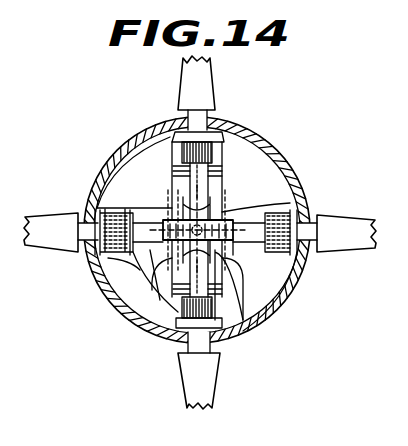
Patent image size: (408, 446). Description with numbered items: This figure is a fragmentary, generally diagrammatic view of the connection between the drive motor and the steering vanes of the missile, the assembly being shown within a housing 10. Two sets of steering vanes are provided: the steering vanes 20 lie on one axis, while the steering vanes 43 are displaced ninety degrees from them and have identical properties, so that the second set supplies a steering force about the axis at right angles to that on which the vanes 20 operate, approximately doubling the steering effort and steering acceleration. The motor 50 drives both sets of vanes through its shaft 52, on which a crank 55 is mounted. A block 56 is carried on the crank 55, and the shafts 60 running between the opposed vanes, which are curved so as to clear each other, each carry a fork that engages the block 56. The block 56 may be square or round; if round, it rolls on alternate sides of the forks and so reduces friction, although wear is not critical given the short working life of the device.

The housing ring 10 is at (272, 138).
The steering vanes 20 is at (41, 216).
The steering vanes 43 is at (205, 76).
The motor 50 is at (160, 292).
The shaft of the motor 52 is at (220, 278).
The crank 55 is at (178, 219).
The block 56 is at (172, 258).
The shafts 60 is at (247, 228).